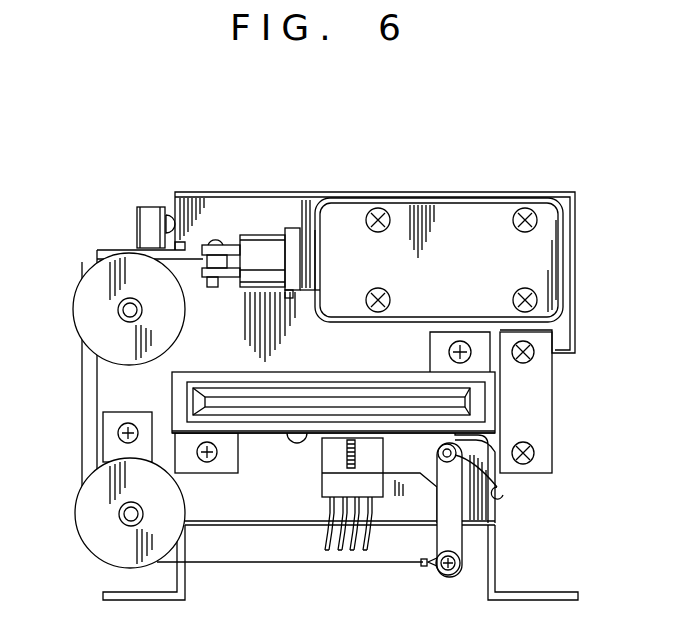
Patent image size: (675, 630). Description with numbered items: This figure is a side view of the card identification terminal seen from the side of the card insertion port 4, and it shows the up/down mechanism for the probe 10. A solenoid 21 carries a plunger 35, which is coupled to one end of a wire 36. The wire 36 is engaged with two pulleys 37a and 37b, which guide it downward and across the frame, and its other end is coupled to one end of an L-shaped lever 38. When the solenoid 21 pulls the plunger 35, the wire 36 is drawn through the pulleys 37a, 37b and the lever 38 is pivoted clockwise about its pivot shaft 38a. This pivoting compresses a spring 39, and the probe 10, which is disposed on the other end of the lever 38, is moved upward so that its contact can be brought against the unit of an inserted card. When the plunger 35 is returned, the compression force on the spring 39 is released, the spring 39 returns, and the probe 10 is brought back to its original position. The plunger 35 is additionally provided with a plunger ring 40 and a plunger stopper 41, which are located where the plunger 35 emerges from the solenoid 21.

The card insertion port 4 is at (242, 385).
The probe 10 is at (389, 487).
The solenoid 21 is at (488, 220).
The plunger 35 is at (270, 247).
The wire 36 is at (82, 383).
The pulley 37a is at (88, 292).
The pulley 37b is at (84, 513).
The L-shaped lever 38 is at (445, 542).
The pivot shaft 38a is at (502, 492).
The spring 39 is at (347, 447).
The plunger ring 40 is at (293, 228).
The plunger stopper 41 is at (308, 250).